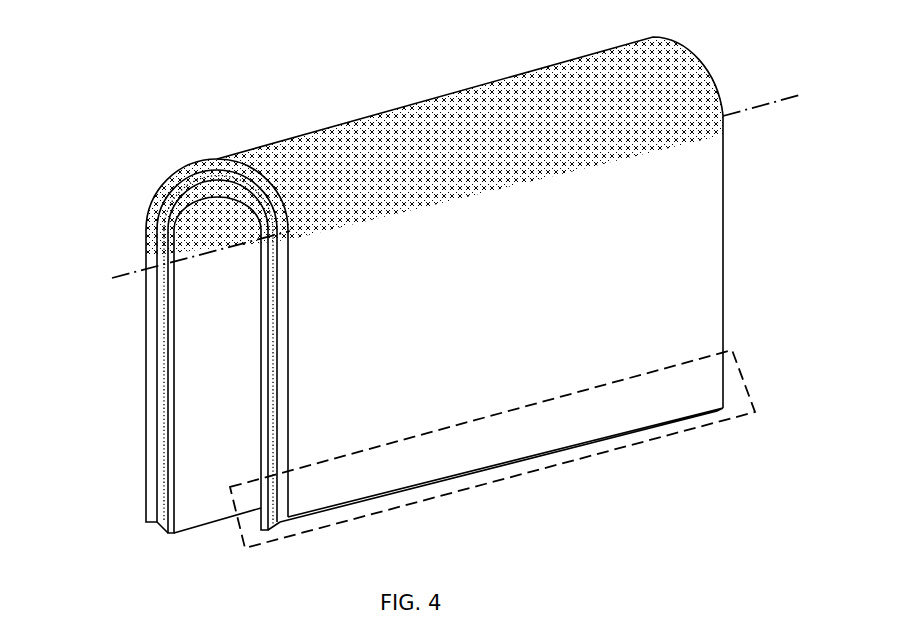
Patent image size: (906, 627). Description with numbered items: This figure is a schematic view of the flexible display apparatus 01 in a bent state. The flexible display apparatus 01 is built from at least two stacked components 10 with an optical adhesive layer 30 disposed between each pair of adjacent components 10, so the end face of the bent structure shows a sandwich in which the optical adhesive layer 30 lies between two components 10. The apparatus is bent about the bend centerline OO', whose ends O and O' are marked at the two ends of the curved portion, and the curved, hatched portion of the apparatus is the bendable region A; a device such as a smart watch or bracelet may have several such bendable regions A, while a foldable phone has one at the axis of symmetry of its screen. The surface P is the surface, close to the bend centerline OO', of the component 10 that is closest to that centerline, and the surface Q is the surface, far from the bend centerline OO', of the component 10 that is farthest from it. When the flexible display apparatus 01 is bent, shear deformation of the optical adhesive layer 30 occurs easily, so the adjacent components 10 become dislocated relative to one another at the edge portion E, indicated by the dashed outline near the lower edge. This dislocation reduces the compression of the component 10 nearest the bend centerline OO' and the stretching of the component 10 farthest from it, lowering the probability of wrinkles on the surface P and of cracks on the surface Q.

The flexible display apparatus 01 is at (142, 108).
The bendable region A is at (422, 122).
The bend centerline O is at (200, 272).
The bend centerline O' is at (761, 95).
The surface close to the bend centerline P is at (192, 338).
The surface far from the bend centerline Q is at (320, 355).
The component 10 is at (153, 412).
The optical adhesive layer 30 is at (162, 457).
The edge portion E is at (567, 461).